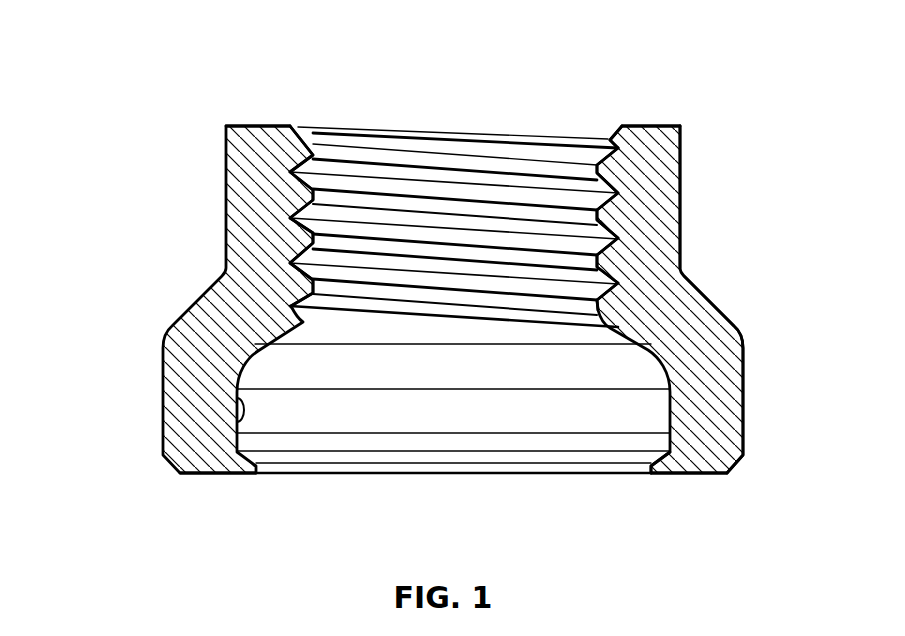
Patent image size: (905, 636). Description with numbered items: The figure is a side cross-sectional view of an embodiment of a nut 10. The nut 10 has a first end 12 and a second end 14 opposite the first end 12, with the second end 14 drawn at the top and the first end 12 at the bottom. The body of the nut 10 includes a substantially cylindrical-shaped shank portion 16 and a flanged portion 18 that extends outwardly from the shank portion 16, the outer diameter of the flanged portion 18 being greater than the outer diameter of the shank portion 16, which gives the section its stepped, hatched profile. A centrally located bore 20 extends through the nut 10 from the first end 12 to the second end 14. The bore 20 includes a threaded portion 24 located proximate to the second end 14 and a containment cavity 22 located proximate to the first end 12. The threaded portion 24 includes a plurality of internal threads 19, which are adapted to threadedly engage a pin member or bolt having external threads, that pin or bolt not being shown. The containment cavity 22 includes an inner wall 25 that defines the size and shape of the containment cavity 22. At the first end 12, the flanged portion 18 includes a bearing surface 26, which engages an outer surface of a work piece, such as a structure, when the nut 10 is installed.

The nut 10 is at (141, 37).
The first end 12 is at (238, 474).
The second end 14 is at (243, 126).
The shank portion 16 is at (663, 207).
The flanged portion 18 is at (730, 388).
The internal threads 19 is at (540, 197).
The bore 20 is at (448, 242).
The containment cavity 22 is at (536, 375).
The threaded portion 24 is at (327, 200).
The inner wall 25 is at (240, 398).
The bearing surface 26 is at (698, 476).